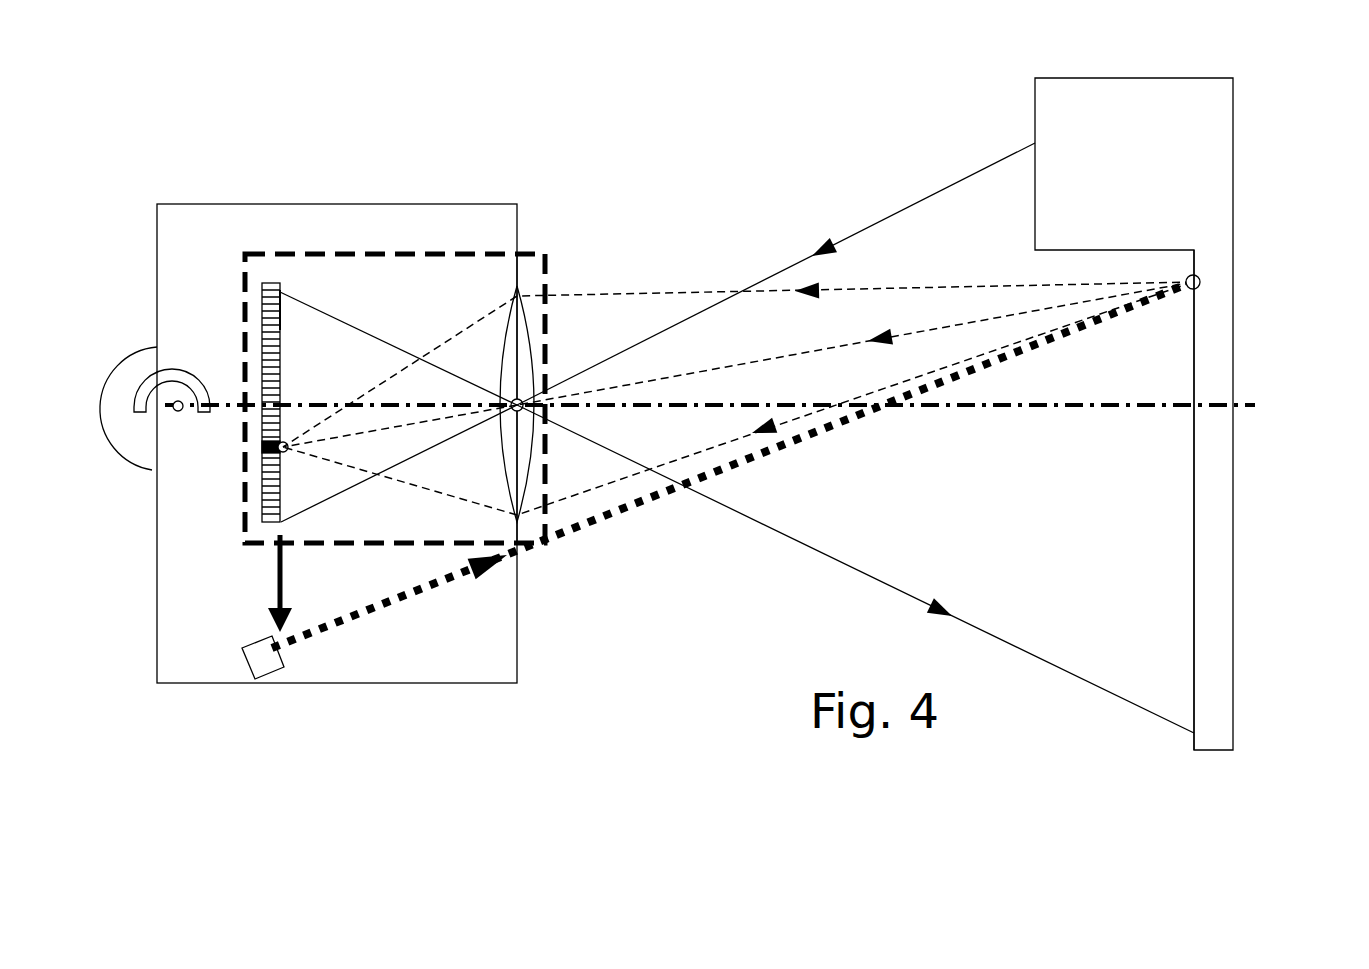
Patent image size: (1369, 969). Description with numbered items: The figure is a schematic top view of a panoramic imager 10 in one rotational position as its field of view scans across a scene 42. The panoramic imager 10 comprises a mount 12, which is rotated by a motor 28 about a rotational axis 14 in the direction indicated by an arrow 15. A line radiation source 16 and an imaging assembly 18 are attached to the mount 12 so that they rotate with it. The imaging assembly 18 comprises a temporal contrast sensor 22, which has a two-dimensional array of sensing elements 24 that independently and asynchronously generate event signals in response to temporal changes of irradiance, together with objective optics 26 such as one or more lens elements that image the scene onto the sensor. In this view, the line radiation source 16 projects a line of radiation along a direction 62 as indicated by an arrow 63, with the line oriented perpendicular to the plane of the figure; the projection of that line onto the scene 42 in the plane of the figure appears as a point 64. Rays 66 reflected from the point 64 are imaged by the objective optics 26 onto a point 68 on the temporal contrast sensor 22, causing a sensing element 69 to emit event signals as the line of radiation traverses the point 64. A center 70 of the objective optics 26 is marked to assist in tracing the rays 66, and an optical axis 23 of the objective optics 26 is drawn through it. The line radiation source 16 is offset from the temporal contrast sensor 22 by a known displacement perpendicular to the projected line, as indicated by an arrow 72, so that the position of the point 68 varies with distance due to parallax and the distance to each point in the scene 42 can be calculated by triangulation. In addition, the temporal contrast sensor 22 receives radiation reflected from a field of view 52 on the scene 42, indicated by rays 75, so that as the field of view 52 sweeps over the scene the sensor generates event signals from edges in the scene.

The panoramic imager 10 is at (178, 125).
The mount 12 is at (462, 635).
The rotational axis 14 is at (175, 410).
The arrow 15 is at (180, 368).
The line radiation source 16 is at (263, 667).
The imaging assembly 18 is at (547, 250).
The temporal contrast sensor 22 is at (268, 282).
The optical axis 23 is at (682, 404).
The sensing elements 24 is at (281, 322).
The objective optics 26 is at (513, 343).
The motor 28 is at (140, 383).
The scene 42 is at (1155, 168).
The field of view 52 is at (1194, 432).
The direction 62 is at (600, 530).
The arrow 63 is at (490, 578).
The point 64 is at (1200, 280).
The rays 66 is at (1002, 353).
The point 68 is at (290, 456).
The sensing element 69 is at (279, 451).
The center 70 is at (522, 400).
The arrow 72 is at (272, 575).
The rays 75 is at (780, 273).